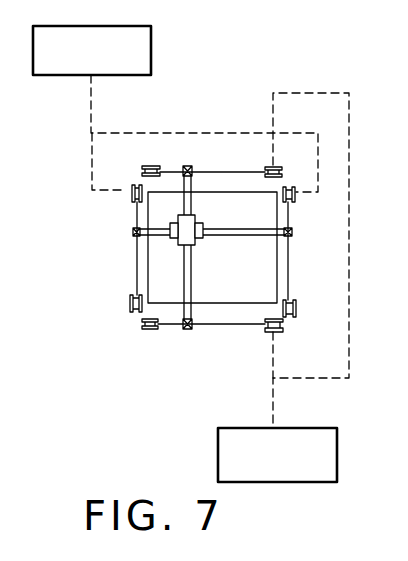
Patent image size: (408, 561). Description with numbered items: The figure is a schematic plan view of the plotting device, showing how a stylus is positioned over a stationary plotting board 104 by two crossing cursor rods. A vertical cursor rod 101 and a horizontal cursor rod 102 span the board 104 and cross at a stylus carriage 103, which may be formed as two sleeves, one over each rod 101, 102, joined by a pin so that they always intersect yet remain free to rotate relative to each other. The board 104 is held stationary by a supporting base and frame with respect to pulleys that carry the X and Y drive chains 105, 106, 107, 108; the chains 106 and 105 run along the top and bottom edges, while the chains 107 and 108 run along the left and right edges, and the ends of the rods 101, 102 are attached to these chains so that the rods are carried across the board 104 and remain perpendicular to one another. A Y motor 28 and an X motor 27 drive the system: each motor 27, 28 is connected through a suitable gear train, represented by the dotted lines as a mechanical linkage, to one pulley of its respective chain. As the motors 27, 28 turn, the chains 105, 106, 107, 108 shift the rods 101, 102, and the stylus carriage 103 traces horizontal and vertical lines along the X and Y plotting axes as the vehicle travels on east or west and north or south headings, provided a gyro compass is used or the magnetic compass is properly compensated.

The Y motor 28 is at (152, 46).
The X motor 27 is at (218, 448).
The cursor rod 101 is at (184, 168).
The cursor rod 102 is at (133, 231).
The stylus carriage 103 is at (197, 241).
The plotting board 104 is at (148, 304).
The drive chain 105 is at (248, 325).
The drive chain 106 is at (222, 172).
The drive chain 107 is at (135, 272).
The drive chain 108 is at (289, 272).